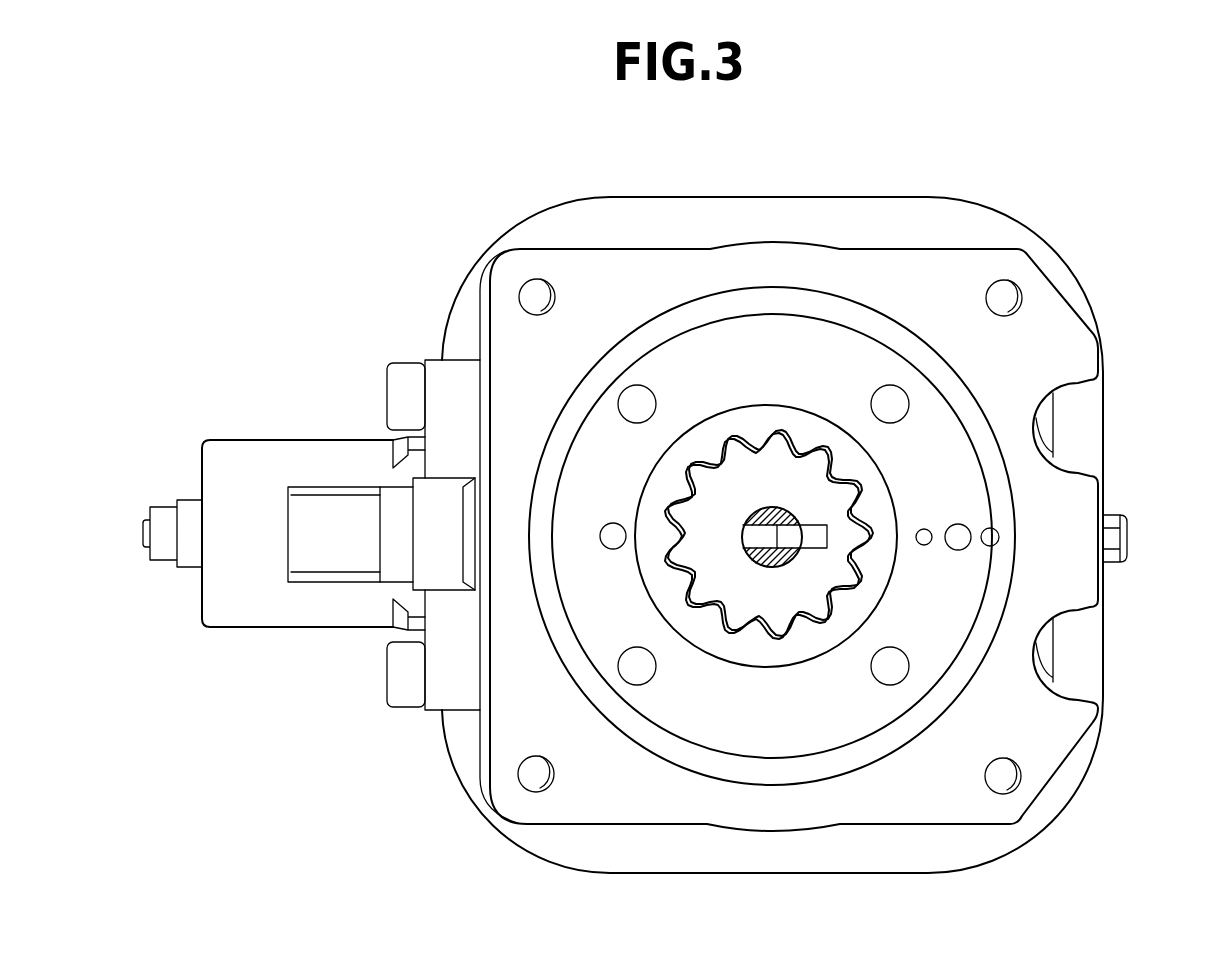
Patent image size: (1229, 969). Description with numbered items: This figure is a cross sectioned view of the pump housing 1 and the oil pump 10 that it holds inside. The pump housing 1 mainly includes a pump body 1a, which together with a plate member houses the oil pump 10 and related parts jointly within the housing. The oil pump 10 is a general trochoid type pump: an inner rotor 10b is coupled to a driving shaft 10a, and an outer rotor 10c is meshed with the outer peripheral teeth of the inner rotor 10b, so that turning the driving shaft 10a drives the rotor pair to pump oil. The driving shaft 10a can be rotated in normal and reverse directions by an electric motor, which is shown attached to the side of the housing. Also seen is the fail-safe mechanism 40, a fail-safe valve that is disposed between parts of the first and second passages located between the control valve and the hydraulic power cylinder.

The pump housing 1 is at (1107, 408).
The pump body 1a is at (1053, 350).
The oil pump 10 is at (878, 307).
The driving shaft 10a is at (755, 506).
The inner rotor 10b is at (739, 607).
The outer rotor 10c is at (873, 588).
The fail-safe mechanism 40 is at (291, 438).